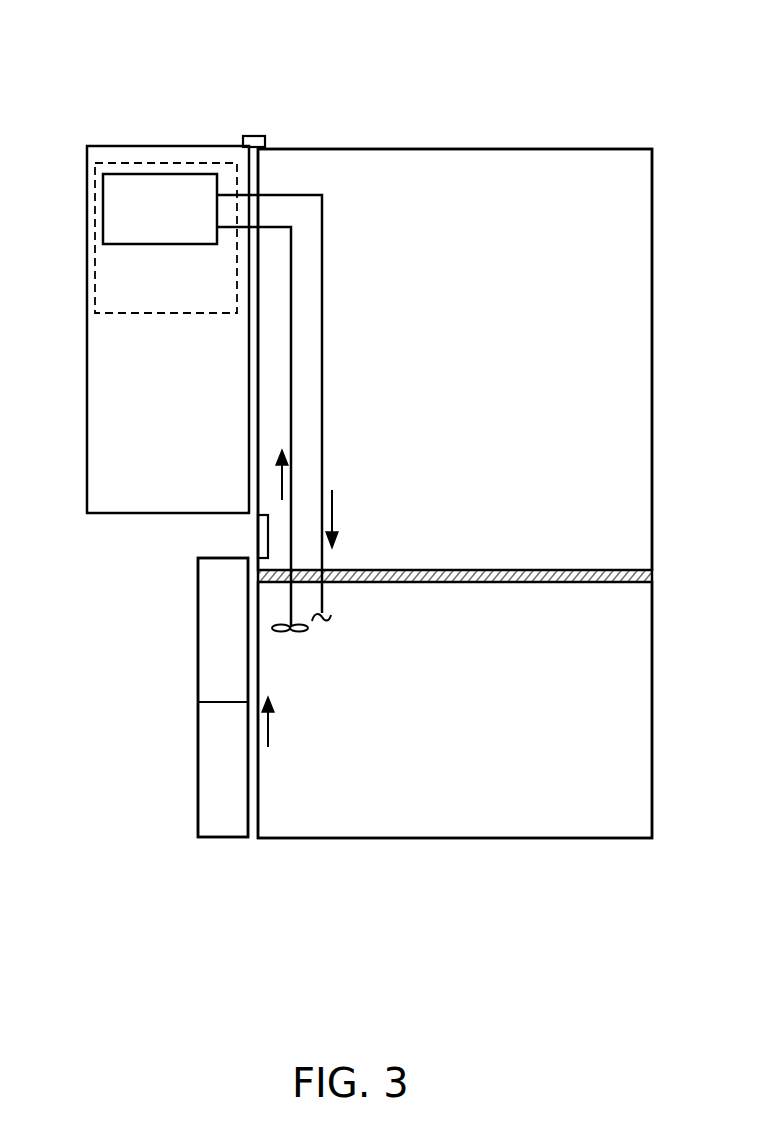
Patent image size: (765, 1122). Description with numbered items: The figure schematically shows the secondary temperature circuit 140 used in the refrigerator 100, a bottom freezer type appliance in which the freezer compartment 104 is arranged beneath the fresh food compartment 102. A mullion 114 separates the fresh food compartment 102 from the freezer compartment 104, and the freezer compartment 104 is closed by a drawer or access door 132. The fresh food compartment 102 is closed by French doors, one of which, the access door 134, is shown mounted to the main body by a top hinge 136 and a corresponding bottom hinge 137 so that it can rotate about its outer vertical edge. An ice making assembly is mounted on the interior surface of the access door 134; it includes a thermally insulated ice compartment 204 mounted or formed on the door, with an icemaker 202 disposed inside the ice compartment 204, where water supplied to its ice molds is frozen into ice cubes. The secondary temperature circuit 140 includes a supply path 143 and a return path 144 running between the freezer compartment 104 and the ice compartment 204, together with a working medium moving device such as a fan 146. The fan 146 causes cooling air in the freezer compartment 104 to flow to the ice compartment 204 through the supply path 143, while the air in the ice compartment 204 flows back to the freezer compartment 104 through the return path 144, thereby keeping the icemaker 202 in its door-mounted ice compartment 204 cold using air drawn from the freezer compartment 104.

The refrigerator 100 is at (549, 82).
The fresh food compartment 102 is at (570, 288).
The freezer compartment 104 is at (607, 623).
The mullion 114 is at (517, 568).
The access door 132 is at (223, 697).
The French door 134 is at (154, 487).
The top hinge 136 is at (253, 137).
The bottom hinge 137 is at (263, 533).
The secondary temperature circuit 140 is at (170, 605).
The supply path 143 is at (293, 380).
The return path 144 is at (322, 445).
The fan 146 is at (305, 631).
The icemaker 202 is at (178, 223).
The ice compartment 204 is at (142, 163).